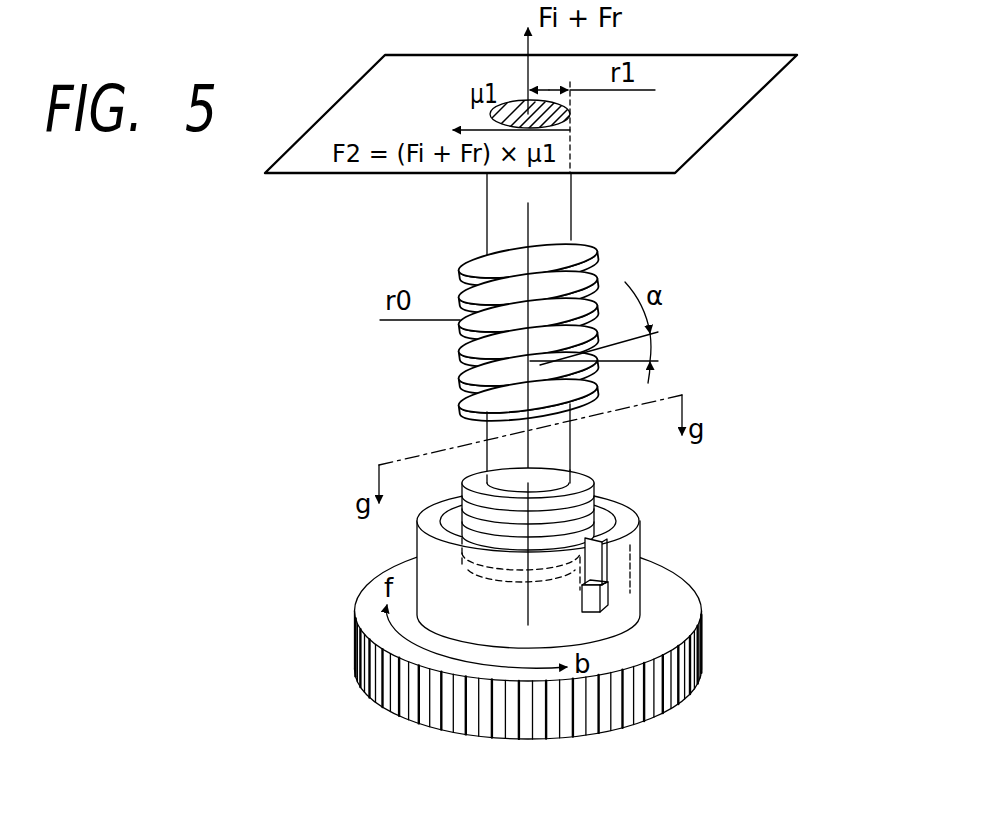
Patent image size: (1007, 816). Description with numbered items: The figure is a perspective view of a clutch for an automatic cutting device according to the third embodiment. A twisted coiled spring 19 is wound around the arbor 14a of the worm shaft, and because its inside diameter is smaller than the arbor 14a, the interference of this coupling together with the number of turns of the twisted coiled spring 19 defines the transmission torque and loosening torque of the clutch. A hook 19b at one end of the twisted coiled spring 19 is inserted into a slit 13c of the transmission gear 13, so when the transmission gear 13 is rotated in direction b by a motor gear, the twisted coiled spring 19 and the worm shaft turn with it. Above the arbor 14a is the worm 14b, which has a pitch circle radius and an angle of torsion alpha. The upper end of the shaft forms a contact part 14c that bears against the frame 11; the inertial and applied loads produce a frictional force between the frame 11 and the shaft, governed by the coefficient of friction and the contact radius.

The frame 11 is at (710, 120).
The contact part 14c is at (567, 125).
The worm 14b is at (600, 270).
The arbor 14a is at (565, 442).
The twisted coiled spring 19 is at (585, 514).
The slit 13c is at (593, 562).
The hook 19b is at (602, 597).
The transmission gear 13 is at (622, 695).